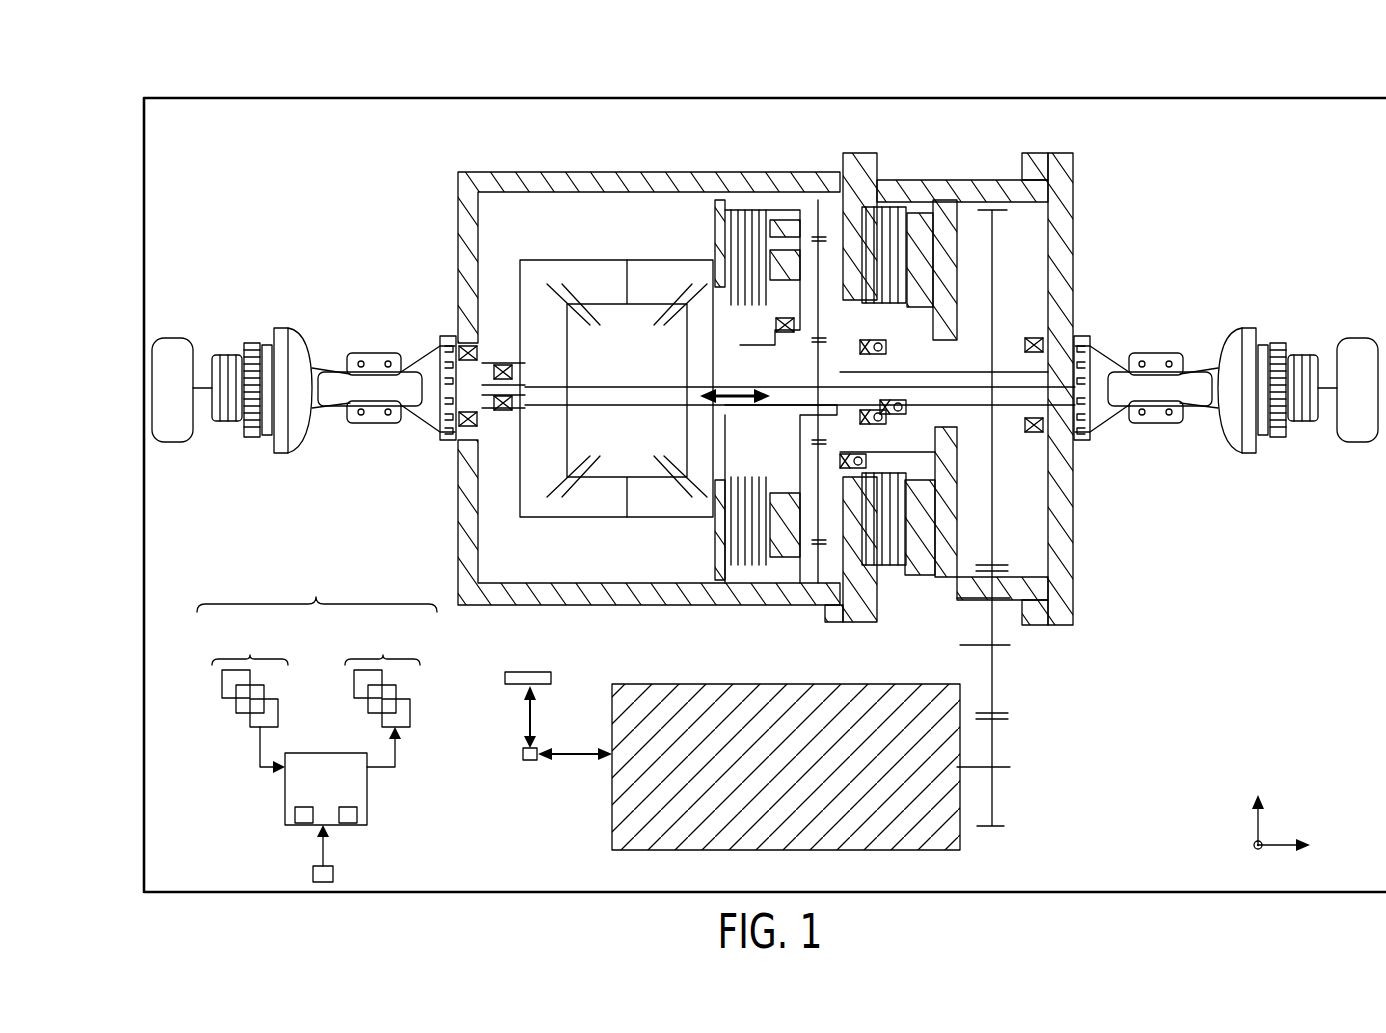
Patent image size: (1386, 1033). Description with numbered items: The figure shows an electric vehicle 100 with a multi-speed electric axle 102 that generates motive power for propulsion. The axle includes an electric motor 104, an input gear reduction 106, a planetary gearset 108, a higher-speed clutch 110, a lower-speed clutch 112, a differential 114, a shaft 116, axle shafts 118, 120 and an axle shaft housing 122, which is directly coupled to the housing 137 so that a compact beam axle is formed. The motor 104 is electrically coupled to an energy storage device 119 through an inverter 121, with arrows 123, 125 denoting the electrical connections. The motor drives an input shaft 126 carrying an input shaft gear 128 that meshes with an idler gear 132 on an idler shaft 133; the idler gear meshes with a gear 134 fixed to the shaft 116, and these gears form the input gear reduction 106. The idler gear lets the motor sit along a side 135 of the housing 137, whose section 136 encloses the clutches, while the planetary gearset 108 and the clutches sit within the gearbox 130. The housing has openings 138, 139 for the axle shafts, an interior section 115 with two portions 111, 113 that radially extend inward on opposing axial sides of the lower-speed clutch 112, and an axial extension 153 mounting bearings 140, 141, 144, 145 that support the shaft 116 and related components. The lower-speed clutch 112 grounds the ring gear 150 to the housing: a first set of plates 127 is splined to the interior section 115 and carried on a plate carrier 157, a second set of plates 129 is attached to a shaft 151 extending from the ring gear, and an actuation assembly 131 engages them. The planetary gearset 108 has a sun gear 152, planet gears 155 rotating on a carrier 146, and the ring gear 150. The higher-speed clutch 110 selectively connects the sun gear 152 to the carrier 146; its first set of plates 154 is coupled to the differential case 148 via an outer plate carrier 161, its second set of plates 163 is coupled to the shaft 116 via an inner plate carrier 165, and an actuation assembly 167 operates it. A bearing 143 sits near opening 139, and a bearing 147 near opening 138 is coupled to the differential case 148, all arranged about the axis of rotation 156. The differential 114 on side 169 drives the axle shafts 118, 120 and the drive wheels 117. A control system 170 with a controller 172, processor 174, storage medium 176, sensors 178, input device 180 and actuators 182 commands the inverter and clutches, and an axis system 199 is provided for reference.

The electric vehicle 100 is at (190, 97).
The multi-speed electric axle 102 is at (272, 222).
The electric motor 104 is at (612, 722).
The input gear reduction 106 is at (1020, 676).
The planetary gearset 108 is at (818, 206).
The higher-speed clutch 110 is at (753, 206).
The portion of interior section 111 is at (878, 188).
The lower-speed clutch 112 is at (895, 204).
The portion of interior section 113 is at (975, 208).
The differential 114 is at (603, 252).
The interior section 115 is at (944, 258).
The shaft 116 is at (972, 405).
The drive wheels 117 is at (175, 338).
The axle shaft 118 is at (698, 410).
The energy storage device 119 is at (540, 672).
The axle shaft 120 is at (553, 385).
The inverter 121 is at (523, 752).
The axle shaft housing 122 is at (289, 457).
The arrow 123 is at (524, 718).
The arrow 125 is at (578, 760).
The input shaft 126 is at (1010, 767).
The first set of plates 127 is at (870, 568).
The input shaft gear 128 is at (1002, 811).
The second set of plates 129 is at (885, 572).
The gearbox 130 is at (1100, 543).
The actuation assembly 131 is at (964, 223).
The idler gear 132 is at (998, 684).
The idler shaft 133 is at (1010, 647).
The gear 134 is at (990, 540).
The side of housing 135 is at (708, 607).
The housing section 136 is at (748, 600).
The housing 137 is at (640, 617).
The housing opening 138 is at (456, 411).
The housing opening 139 is at (1078, 395).
The bearing 140 is at (1018, 436).
The bearing 141 is at (930, 340).
The bearing 143 is at (1080, 370).
The bearings 144 is at (857, 318).
The bearing 145 is at (505, 364).
The carrier 146 is at (850, 205).
The bearing 147 is at (468, 430).
The differential case 148 is at (652, 262).
The ring gear 150 is at (760, 210).
The shaft 151 is at (925, 240).
The sun gear 152 is at (822, 352).
The axial extension 153 is at (1035, 338).
The first set of plates 154 is at (745, 215).
The planet gears 155 is at (800, 268).
The axis of rotation 156 is at (722, 380).
The plate carrier 157 is at (945, 205).
The outer plate carrier 161 is at (770, 210).
The second set of plates 163 is at (733, 318).
The inner plate carrier 165 is at (748, 310).
The actuation assembly 167 is at (790, 240).
The side of axle 169 is at (541, 156).
The control system 170 is at (317, 585).
The controller 172 is at (339, 795).
The processor 174 is at (295, 814).
The electronic storage medium 176 is at (357, 814).
The sensors 178 is at (250, 695).
The input device 180 is at (333, 870).
The actuators 182 is at (382, 692).
The axis system 199 is at (1300, 818).